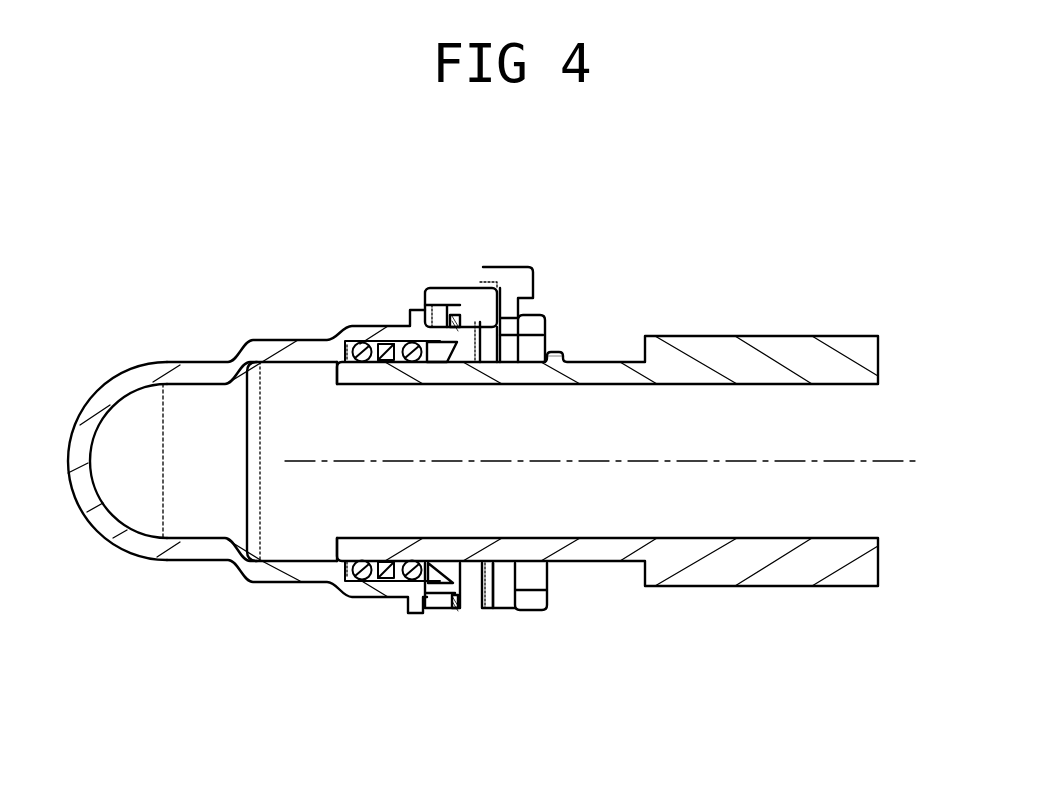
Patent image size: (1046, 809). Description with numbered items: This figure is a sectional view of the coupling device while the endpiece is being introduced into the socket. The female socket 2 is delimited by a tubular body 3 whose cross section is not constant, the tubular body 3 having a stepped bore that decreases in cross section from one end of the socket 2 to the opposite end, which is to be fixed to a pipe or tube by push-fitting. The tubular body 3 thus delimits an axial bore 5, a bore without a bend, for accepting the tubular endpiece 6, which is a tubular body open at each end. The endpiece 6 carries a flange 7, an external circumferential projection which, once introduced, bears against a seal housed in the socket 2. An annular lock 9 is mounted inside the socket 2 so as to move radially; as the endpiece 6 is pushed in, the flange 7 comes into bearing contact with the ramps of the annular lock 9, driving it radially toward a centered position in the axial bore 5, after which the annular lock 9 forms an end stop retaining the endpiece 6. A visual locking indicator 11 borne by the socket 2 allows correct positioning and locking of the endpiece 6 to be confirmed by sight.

The female socket 2 is at (293, 582).
The tubular body 3 is at (382, 585).
The axial bore 5 is at (532, 577).
The tubular endpiece 6 is at (745, 495).
The flange 7 is at (567, 357).
The annular lock 9 is at (517, 280).
The visual locking indicator 11 is at (437, 291).